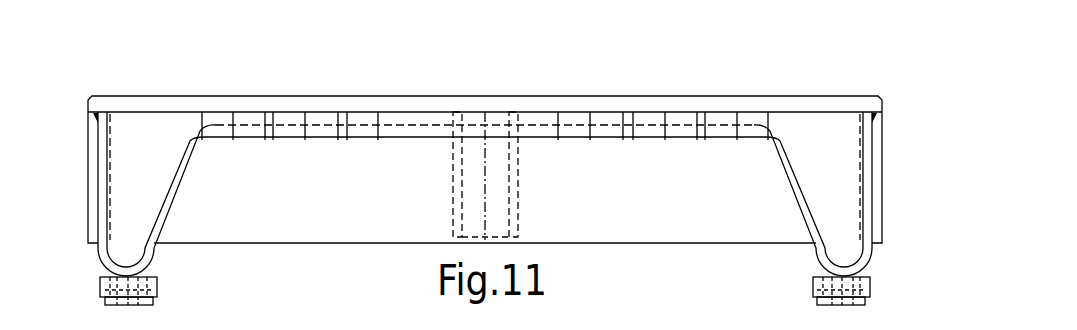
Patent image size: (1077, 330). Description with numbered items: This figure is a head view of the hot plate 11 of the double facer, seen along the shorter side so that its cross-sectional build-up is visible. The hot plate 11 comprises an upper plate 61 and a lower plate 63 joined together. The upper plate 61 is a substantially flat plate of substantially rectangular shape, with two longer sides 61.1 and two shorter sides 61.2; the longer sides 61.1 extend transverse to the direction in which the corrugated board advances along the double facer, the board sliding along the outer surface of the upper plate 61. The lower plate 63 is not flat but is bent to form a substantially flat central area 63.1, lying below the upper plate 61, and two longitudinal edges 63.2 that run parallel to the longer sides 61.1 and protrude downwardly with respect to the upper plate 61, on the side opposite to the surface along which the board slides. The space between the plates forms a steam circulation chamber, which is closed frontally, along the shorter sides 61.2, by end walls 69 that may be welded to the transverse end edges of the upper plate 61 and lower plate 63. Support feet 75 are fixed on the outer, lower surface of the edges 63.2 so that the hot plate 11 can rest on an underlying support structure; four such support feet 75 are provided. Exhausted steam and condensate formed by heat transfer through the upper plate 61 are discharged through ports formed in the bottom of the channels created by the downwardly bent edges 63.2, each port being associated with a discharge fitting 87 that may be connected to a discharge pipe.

The hot plate 11 is at (893, 56).
The upper plate 61 is at (793, 96).
The longer sides 61.1 is at (88, 98).
The shorter sides 61.2 is at (835, 104).
The lower plate 63 is at (394, 146).
The central area 63.1 is at (583, 134).
The longitudinal edges 63.2 is at (171, 196).
The end walls 69 is at (840, 207).
The support feet 75 is at (155, 292).
The discharge fitting 87 is at (143, 302).